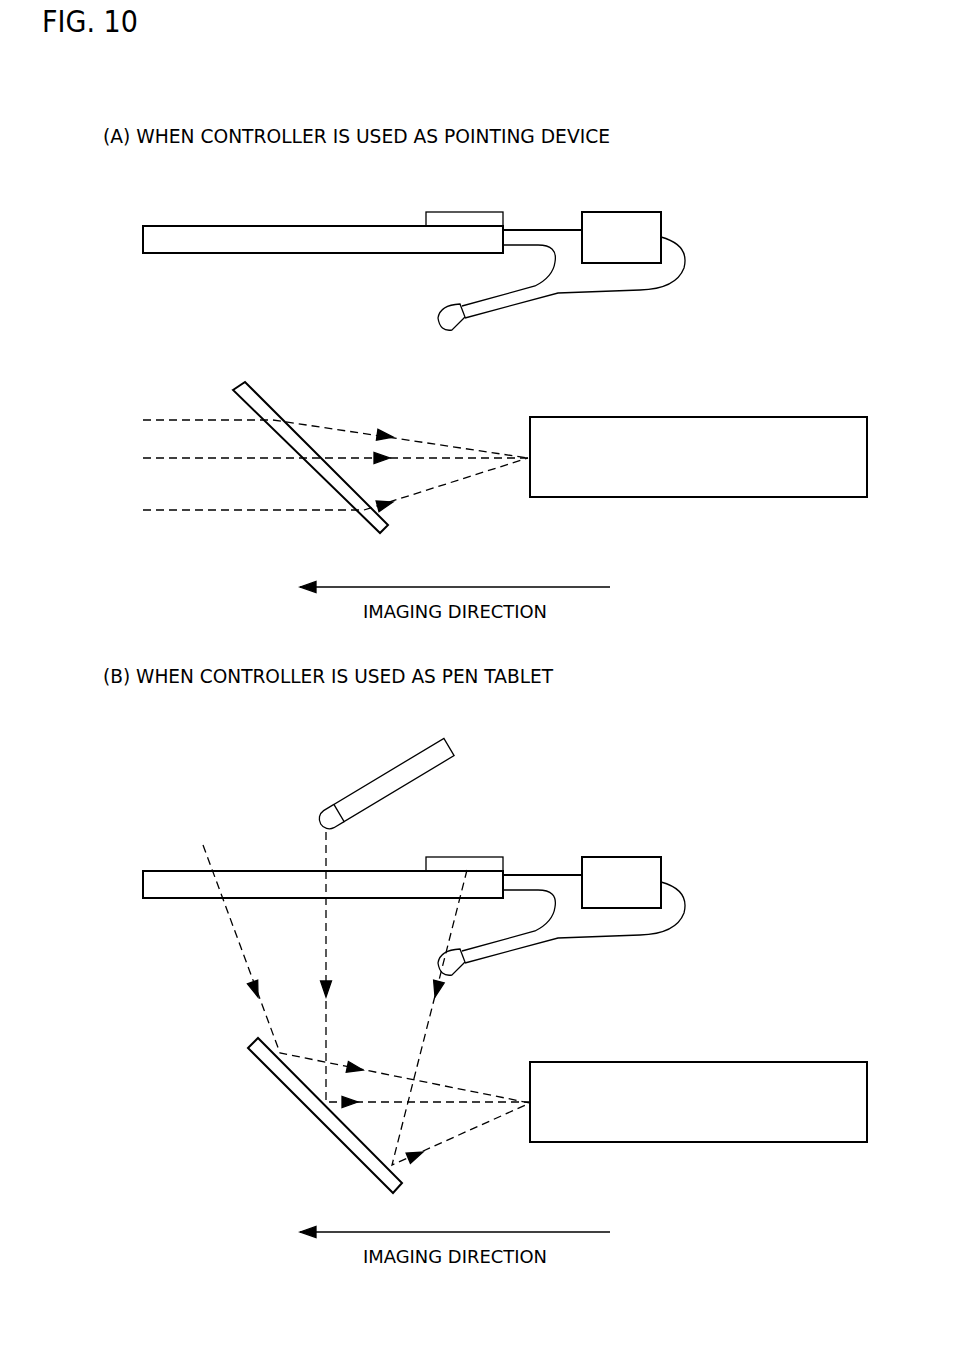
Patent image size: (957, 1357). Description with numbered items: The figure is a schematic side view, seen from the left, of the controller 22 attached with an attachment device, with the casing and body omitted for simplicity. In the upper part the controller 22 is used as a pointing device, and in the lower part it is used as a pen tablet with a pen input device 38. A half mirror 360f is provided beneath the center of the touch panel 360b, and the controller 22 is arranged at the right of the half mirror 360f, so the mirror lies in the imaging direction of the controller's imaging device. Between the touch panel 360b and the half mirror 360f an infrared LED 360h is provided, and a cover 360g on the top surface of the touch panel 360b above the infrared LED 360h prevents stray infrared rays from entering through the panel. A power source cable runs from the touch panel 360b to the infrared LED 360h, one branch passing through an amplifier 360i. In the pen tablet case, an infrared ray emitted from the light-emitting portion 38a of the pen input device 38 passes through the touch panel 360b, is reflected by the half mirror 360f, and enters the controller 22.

The controller 22 is at (687, 427).
The pen input device 38 is at (413, 768).
The light-emitting portion 38a is at (326, 816).
The touch panel 360b is at (155, 240).
The half mirror 360f is at (268, 402).
The cover 360g is at (497, 220).
The infrared LED 360h is at (460, 320).
The amplifier 360i is at (637, 217).